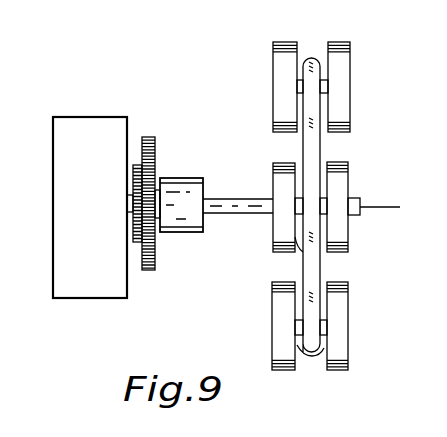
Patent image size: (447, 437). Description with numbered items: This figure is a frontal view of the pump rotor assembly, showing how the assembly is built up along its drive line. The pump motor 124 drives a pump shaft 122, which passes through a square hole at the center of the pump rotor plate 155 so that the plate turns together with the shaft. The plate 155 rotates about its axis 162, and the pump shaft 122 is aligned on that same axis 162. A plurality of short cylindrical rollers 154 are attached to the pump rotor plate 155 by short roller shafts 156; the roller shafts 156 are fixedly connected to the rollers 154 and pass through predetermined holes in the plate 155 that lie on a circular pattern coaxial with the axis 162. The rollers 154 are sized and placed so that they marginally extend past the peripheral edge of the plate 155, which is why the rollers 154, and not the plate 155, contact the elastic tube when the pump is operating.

The pump motor 124 is at (106, 213).
The pump shaft 122 is at (240, 218).
The rollers 154 is at (338, 42).
The pump rotor plate 155 is at (300, 146).
The roller shafts 156 is at (318, 80).
The axis 162 is at (388, 208).